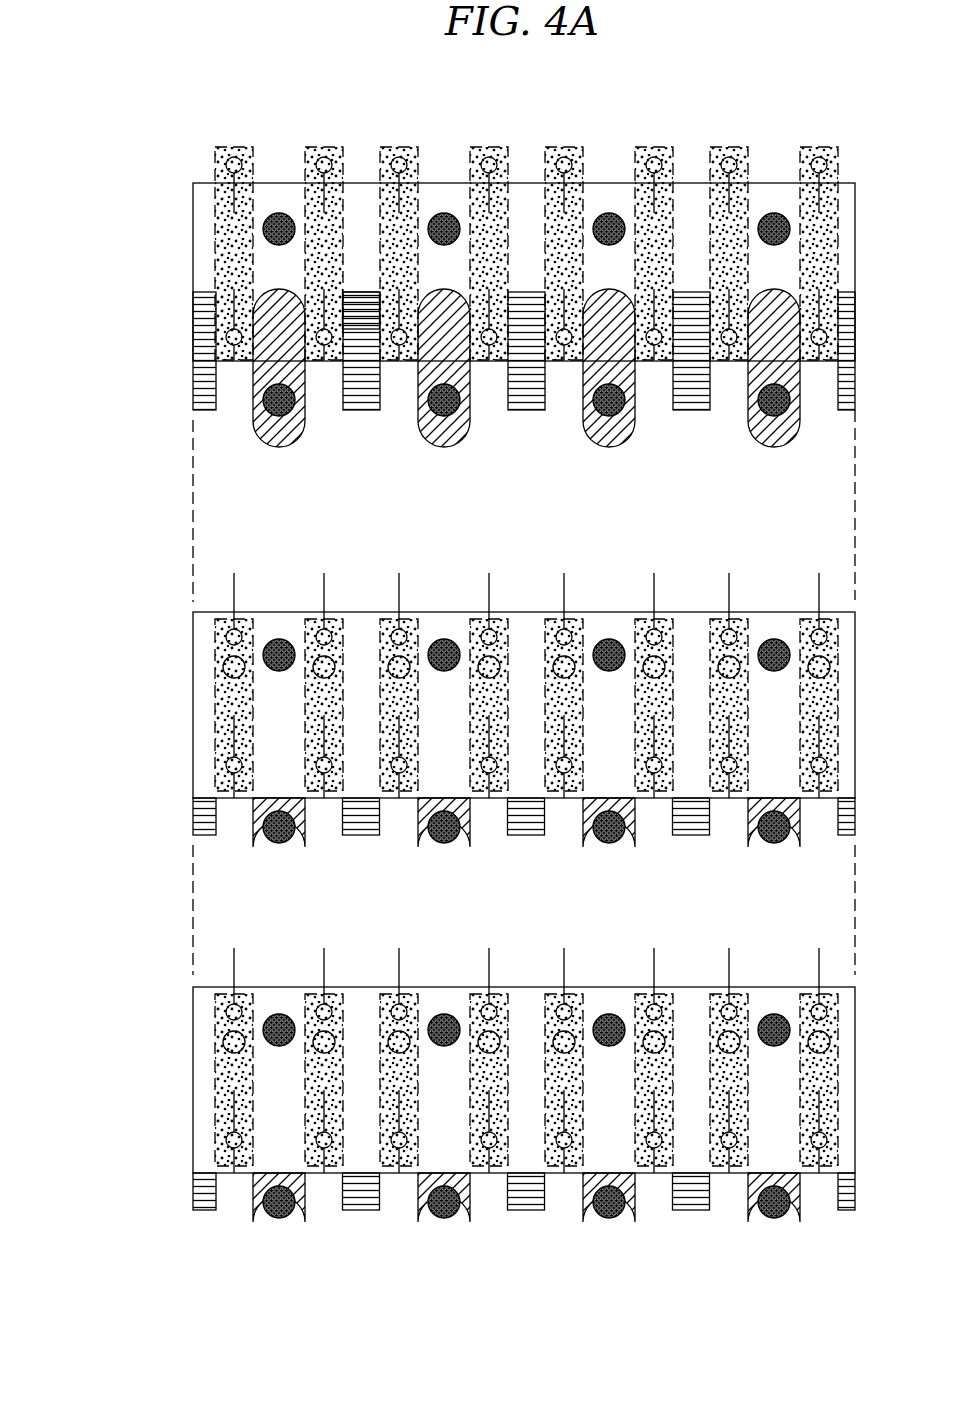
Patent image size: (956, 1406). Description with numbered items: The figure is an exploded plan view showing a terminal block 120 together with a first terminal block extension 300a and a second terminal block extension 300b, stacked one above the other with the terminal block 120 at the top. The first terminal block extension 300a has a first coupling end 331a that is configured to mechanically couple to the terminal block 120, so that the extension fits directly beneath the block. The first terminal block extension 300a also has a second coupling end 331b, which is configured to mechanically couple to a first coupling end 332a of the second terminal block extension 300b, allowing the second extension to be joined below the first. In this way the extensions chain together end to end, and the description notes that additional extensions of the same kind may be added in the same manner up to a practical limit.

The terminal block 120 is at (145, 260).
The first terminal block extension 300a is at (145, 732).
The first coupling end of the first terminal block extension 331a is at (160, 618).
The first coupling end of the second terminal block extension 332a is at (160, 798).
The second terminal block extension 300b is at (145, 1087).
The second coupling end of the first terminal block extension 331b is at (160, 993).